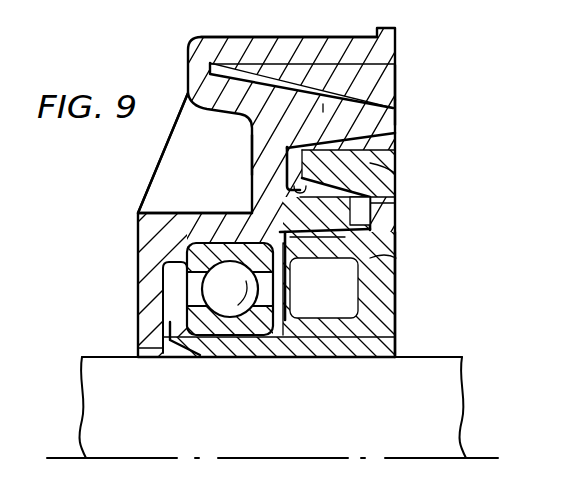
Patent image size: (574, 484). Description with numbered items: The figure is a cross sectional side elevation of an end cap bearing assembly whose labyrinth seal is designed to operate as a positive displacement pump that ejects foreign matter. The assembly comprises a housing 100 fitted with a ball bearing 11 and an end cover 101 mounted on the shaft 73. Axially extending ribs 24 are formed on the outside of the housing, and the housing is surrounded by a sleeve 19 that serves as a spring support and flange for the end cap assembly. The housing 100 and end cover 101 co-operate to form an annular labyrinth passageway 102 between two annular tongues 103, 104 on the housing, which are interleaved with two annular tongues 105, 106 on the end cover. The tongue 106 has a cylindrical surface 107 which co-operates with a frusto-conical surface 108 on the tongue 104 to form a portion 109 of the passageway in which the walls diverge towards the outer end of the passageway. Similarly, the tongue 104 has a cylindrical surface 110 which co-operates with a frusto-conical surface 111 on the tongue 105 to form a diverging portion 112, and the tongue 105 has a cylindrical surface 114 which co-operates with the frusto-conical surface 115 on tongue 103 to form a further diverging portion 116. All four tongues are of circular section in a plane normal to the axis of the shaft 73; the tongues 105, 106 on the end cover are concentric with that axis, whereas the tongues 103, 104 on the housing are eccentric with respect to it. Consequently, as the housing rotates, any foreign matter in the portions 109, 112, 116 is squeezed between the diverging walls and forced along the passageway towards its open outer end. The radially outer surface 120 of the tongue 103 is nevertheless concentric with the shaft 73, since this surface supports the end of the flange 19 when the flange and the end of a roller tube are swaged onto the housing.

The ball bearing 11 is at (165, 298).
The sleeve 19 is at (309, 37).
The axially extending ribs 24 is at (258, 72).
The shaft 73 is at (457, 400).
The housing 100 is at (138, 272).
The end cover 101 is at (396, 322).
The annular labyrinth passageway 102 is at (288, 176).
The annular tongue 103 is at (396, 112).
The annular tongue 104 is at (396, 198).
The annular tongue 105 is at (396, 173).
The annular tongue 106 is at (396, 258).
The cylindrical surface 107 is at (372, 226).
The frusto-conical surface 108 is at (328, 226).
The passageway portion 109 is at (396, 207).
The cylindrical surface 110 is at (292, 192).
The frusto-conical surface 111 is at (254, 156).
The passageway portion 112 is at (197, 213).
The cylindrical surface 114 is at (396, 145).
The frusto-conical surface 115 is at (396, 137).
The passageway portion 116 is at (323, 112).
The radially outer surface 120 is at (395, 87).